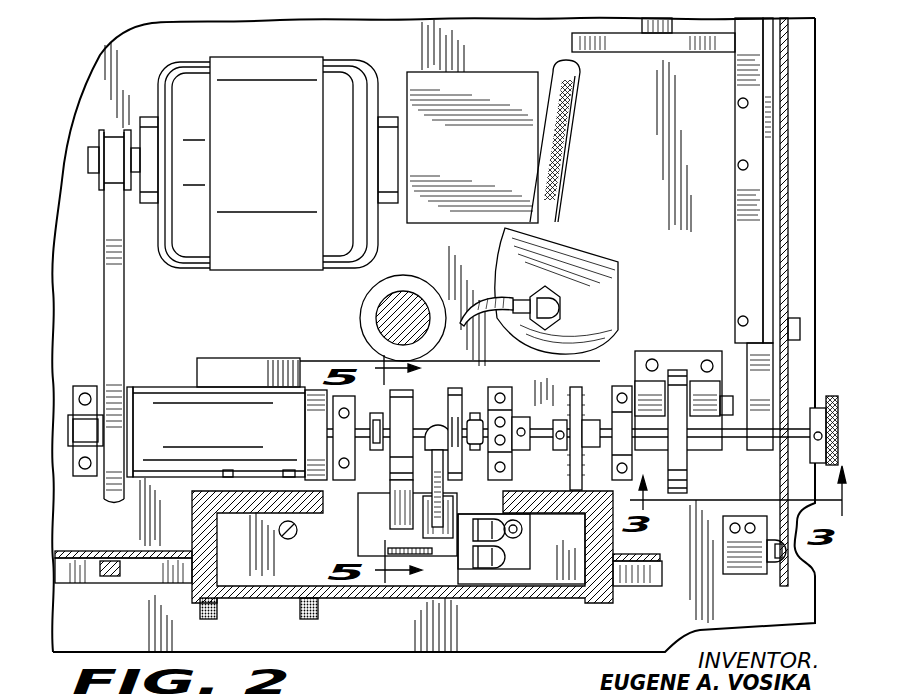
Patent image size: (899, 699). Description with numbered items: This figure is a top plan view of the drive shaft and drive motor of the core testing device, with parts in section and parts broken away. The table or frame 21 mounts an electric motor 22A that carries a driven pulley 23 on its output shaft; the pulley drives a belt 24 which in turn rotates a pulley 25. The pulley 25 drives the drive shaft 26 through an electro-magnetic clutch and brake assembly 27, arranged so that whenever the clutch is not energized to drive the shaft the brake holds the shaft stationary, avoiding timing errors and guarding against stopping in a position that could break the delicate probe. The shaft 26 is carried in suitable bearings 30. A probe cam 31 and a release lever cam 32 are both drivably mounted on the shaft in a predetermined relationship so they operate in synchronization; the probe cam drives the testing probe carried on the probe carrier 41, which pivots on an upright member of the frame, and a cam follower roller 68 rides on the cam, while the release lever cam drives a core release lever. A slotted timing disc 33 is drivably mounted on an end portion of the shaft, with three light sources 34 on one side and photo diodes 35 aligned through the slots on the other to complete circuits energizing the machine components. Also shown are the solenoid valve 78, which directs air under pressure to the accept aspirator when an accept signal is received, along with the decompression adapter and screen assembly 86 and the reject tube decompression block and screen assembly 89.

The table or frame 21 is at (95, 80).
The electric motor 22A is at (170, 80).
The driven pulley 23 is at (100, 137).
The belt 24 is at (118, 311).
The pulley 25 is at (103, 486).
The drive shaft 26 is at (340, 432).
The electro-magnetic clutch and brake assembly 27 is at (240, 382).
The bearings 30 is at (508, 462).
The probe cam 31 is at (412, 388).
The release lever cam 32 is at (455, 390).
The timing disc 33 is at (678, 370).
The light sources 34 is at (718, 390).
The photo diodes 35 is at (642, 385).
The probe carrier 41 is at (397, 506).
The cam follower roller 68 is at (442, 423).
The solenoid valve 78 is at (596, 238).
The decompression adapter and screen assembly 86 is at (500, 548).
The decompression block and screen assembly 89 is at (487, 568).